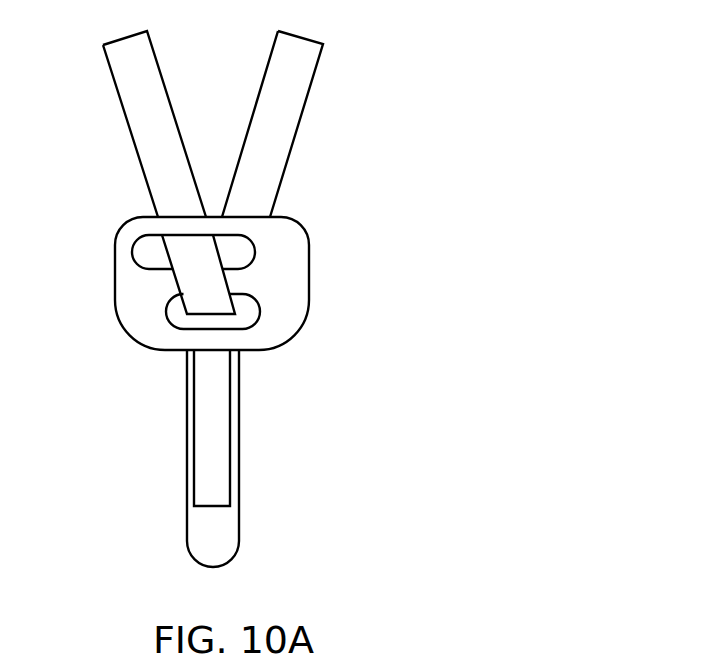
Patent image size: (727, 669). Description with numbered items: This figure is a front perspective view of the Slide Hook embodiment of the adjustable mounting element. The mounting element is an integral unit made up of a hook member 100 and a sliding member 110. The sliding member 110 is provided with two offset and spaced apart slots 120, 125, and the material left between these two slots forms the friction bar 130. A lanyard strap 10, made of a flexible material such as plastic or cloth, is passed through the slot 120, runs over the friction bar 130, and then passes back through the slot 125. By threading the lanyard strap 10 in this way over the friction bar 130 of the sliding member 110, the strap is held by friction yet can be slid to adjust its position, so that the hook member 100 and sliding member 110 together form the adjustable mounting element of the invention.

The lanyard strap 10 is at (267, 65).
The hook member 100 is at (239, 521).
The sliding member 110 is at (300, 275).
The slot 120 is at (135, 246).
The slot 125 is at (175, 307).
The friction bar 130 is at (237, 278).